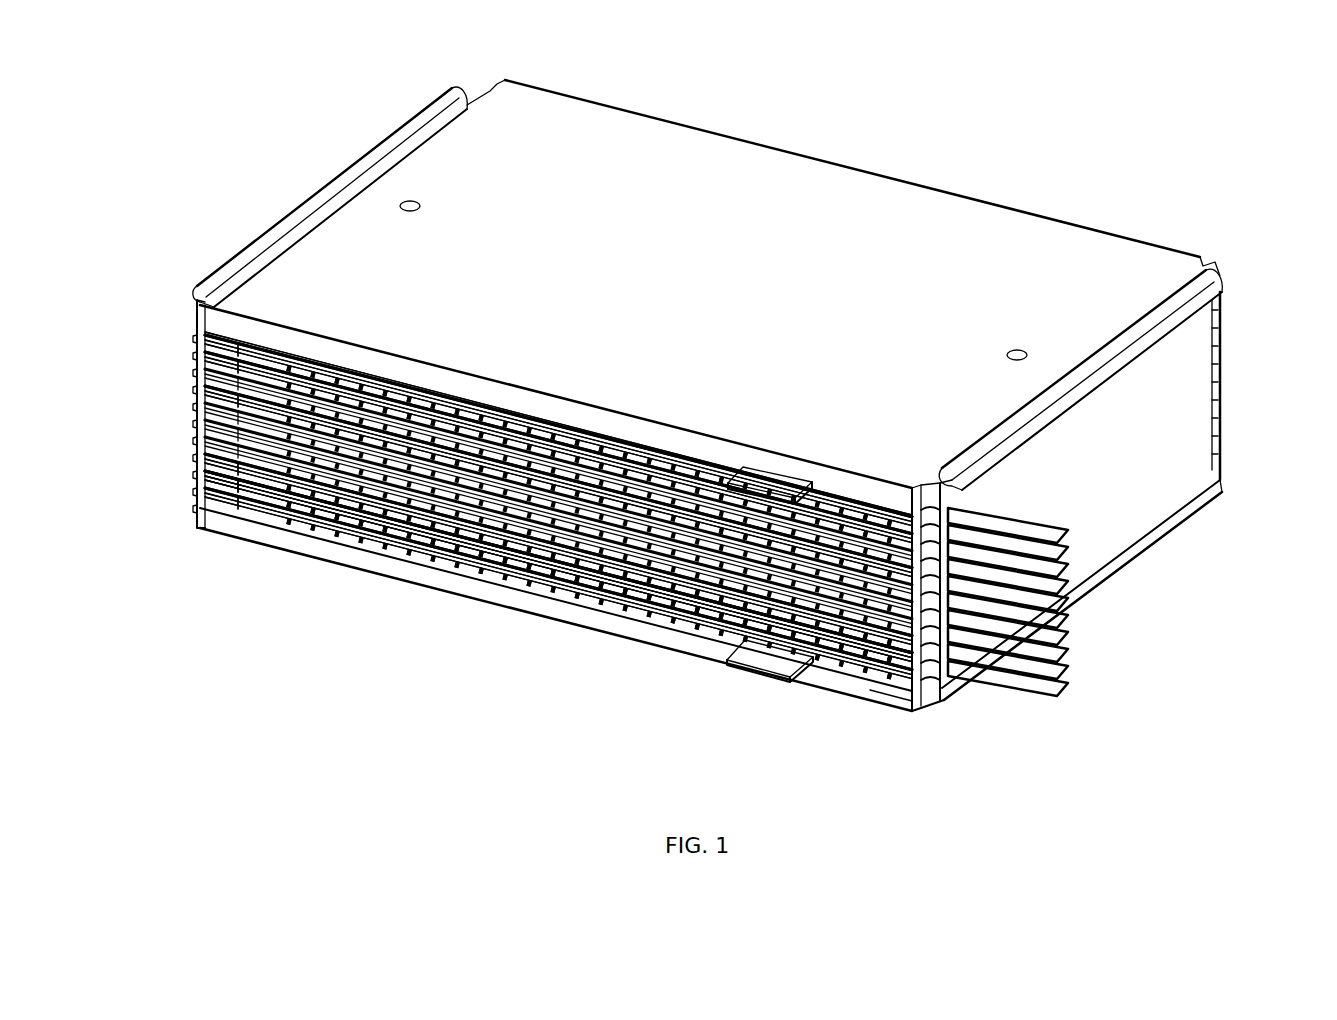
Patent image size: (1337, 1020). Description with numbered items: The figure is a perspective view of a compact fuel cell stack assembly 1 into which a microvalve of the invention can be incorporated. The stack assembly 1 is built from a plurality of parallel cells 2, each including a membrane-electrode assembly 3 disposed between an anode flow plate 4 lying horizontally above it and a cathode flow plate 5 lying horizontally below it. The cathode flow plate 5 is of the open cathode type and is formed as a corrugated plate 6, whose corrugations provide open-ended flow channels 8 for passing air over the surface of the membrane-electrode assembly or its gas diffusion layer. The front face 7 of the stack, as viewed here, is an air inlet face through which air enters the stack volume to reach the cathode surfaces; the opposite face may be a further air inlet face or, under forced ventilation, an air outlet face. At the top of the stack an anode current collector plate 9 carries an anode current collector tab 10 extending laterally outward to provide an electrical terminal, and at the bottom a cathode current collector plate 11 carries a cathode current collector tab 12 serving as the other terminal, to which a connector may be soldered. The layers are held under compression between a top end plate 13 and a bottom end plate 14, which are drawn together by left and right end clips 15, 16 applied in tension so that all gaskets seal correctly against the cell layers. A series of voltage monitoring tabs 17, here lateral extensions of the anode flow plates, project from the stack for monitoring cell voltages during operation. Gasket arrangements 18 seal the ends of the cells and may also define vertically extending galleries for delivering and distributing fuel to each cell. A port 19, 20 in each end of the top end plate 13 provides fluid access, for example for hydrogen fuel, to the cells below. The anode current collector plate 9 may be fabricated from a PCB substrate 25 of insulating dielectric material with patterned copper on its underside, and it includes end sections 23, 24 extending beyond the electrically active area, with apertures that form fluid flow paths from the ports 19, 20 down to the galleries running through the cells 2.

The fuel cell stack assembly 1 is at (972, 120).
The cells 2 is at (200, 415).
The membrane-electrode assembly 3 is at (200, 500).
The anode flow plate 4 is at (200, 355).
The cathode flow plate 5 is at (300, 535).
The corrugated plate 6 is at (498, 582).
The front face 7 is at (596, 640).
The open-ended flow channels 8 is at (443, 570).
The anode current collector plate 9 is at (690, 447).
The anode current collector tab 10 is at (780, 490).
The cathode current collector plate 11 is at (850, 672).
The cathode current collector tab 12 is at (790, 665).
The top end plate 13 is at (696, 318).
The bottom end plate 14 is at (365, 568).
The left end clip 15 is at (330, 200).
The right end clip 16 is at (1190, 395).
The voltage monitoring tabs 17 is at (1062, 570).
The gasket arrangements 18 is at (930, 687).
The port 19 is at (1010, 352).
The port 20 is at (418, 205).
The end section 23 is at (292, 352).
The end section 24 is at (886, 505).
The PCB substrate 25 is at (578, 432).